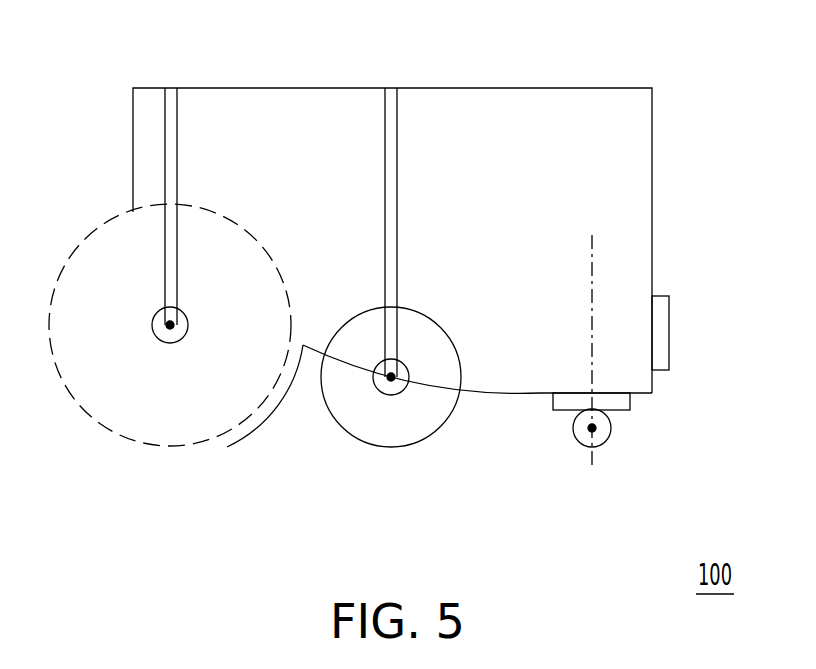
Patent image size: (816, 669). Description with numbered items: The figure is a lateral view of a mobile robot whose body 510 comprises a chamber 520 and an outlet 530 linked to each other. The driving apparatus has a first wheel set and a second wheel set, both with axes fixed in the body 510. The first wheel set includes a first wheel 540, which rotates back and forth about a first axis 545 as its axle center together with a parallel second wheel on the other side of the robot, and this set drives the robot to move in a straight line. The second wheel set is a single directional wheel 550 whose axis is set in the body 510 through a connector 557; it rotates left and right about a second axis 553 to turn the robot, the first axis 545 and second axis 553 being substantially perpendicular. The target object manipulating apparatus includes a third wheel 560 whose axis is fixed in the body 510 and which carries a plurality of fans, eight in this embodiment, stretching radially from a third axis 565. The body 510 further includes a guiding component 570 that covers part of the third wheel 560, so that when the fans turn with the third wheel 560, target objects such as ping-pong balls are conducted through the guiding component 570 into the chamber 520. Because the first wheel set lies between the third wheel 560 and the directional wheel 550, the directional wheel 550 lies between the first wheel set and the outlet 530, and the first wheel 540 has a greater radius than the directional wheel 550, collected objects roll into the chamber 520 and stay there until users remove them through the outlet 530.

The body 510 is at (622, 88).
The chamber 520 is at (600, 153).
The outlet 530 is at (660, 355).
The first wheel 540 is at (447, 422).
The first axis 545 is at (391, 377).
The directional wheel 550 is at (611, 428).
The second axis 553 is at (592, 272).
The connector 557 is at (615, 402).
The third wheel 560 is at (58, 370).
The third axis 565 is at (170, 330).
The guiding component 570 is at (267, 417).